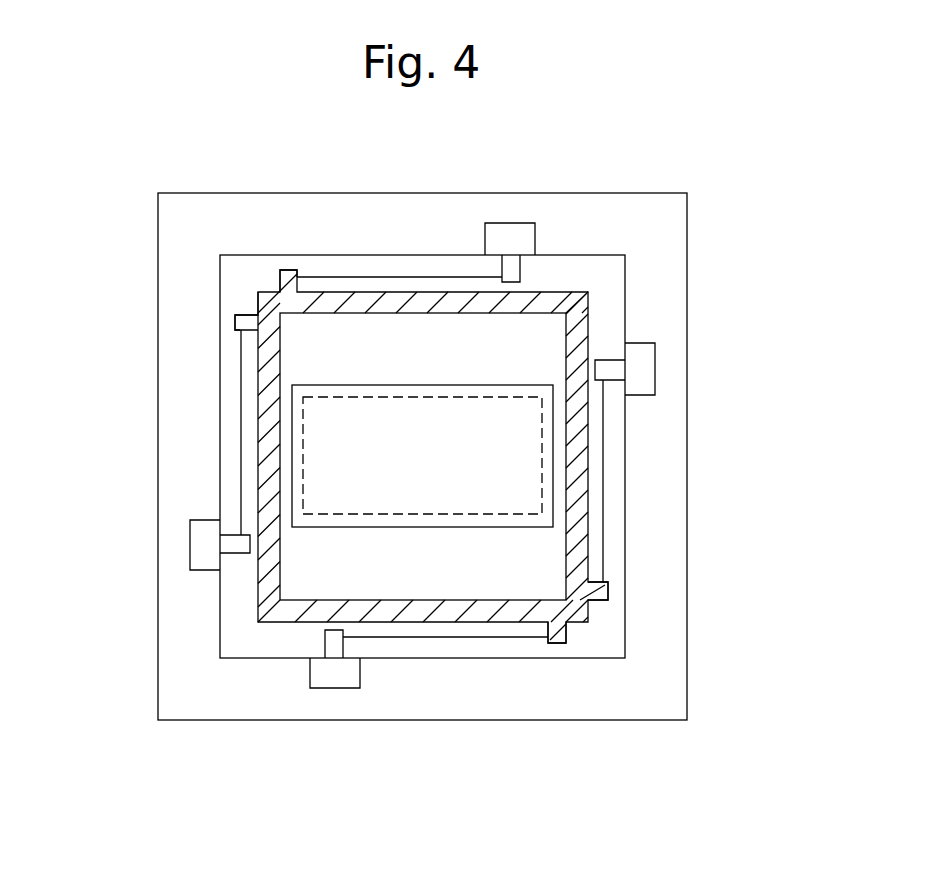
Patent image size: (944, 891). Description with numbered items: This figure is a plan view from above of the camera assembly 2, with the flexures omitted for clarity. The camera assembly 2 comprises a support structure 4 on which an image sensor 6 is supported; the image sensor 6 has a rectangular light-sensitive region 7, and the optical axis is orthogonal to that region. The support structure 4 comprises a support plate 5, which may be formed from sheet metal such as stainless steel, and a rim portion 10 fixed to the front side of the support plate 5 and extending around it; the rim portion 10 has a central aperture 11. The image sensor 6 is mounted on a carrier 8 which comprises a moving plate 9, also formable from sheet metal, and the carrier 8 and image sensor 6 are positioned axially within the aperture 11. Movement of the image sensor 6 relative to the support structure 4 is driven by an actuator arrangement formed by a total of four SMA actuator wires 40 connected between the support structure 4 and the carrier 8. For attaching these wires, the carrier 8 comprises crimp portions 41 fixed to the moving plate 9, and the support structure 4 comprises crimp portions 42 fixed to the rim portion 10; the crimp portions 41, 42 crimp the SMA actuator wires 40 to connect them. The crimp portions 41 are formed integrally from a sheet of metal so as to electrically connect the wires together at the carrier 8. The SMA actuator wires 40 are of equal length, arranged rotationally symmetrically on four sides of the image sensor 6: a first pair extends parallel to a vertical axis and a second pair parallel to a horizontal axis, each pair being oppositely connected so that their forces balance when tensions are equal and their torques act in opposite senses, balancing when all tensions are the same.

The camera assembly 2 is at (93, 512).
The support structure 4 is at (608, 238).
The support plate 5 is at (610, 297).
The image sensor 6 is at (550, 460).
The light-sensitive region 7 is at (552, 492).
The carrier 8 is at (497, 582).
The moving plate 9 is at (543, 550).
The rim portion 10 is at (663, 238).
The central aperture 11 is at (626, 271).
The SMA actuator wires 40 is at (398, 276).
The crimp portions 41 is at (288, 271).
The crimp portions 42 is at (510, 266).